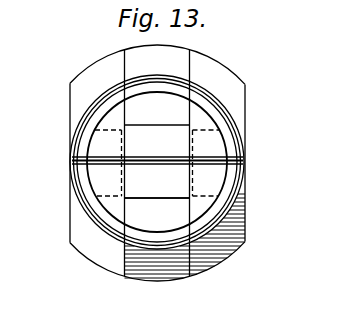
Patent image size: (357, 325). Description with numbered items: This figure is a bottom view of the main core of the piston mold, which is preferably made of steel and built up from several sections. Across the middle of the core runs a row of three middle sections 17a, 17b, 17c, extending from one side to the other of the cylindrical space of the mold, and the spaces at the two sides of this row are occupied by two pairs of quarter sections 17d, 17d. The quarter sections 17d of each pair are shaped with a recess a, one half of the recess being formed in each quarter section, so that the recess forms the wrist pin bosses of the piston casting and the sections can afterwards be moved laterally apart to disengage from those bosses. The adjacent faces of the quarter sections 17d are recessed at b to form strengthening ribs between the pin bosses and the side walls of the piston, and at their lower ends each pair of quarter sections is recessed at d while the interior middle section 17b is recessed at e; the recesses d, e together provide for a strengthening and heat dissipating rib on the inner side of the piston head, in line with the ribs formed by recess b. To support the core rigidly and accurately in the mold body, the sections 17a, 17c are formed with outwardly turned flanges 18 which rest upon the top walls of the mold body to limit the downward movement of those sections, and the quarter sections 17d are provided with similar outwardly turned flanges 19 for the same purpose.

The outwardly turned flanges 18 is at (160, 62).
The outwardly turned flanges 19 is at (72, 83).
The middle section 17a is at (129, 162).
The interior middle section 17b is at (145, 155).
The middle section 17c is at (157, 210).
The quarter sections 17d is at (193, 166).
The recess a is at (74, 140).
The recess b is at (85, 163).
The recess d is at (110, 168).
The recess e is at (167, 166).